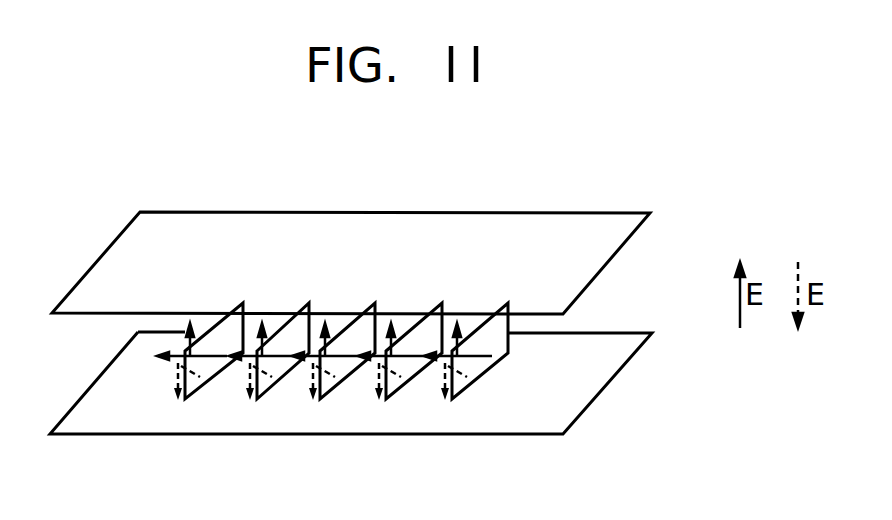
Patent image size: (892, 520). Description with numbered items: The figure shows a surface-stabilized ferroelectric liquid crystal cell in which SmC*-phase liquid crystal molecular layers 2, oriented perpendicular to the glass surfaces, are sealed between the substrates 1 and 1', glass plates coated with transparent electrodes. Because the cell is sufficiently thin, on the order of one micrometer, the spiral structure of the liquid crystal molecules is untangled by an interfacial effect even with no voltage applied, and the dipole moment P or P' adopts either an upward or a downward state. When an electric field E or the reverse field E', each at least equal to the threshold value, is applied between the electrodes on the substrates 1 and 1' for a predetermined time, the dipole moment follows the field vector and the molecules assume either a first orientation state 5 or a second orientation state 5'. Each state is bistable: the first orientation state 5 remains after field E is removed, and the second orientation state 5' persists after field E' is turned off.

The substrate 1 is at (351, 229).
The substrate 1' is at (351, 383).
The liquid crystal molecular layer 2 is at (497, 313).
The first orientation state 5 is at (324, 305).
The second orientation state 5' is at (324, 426).